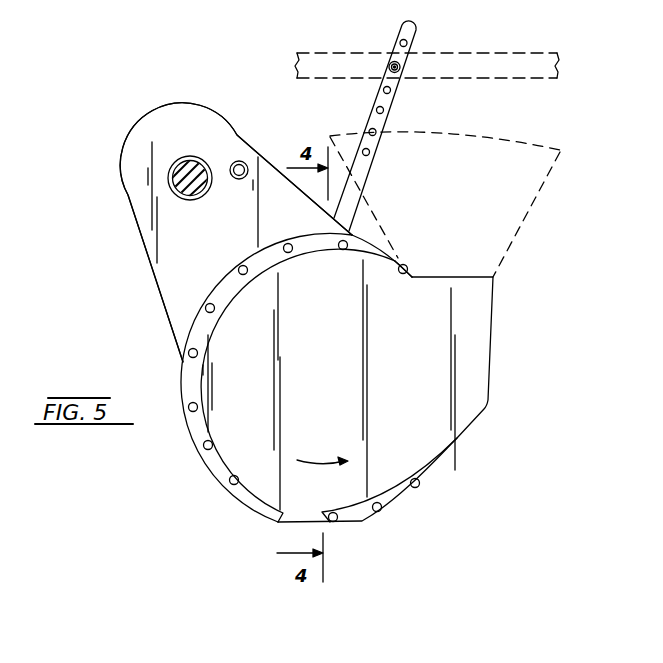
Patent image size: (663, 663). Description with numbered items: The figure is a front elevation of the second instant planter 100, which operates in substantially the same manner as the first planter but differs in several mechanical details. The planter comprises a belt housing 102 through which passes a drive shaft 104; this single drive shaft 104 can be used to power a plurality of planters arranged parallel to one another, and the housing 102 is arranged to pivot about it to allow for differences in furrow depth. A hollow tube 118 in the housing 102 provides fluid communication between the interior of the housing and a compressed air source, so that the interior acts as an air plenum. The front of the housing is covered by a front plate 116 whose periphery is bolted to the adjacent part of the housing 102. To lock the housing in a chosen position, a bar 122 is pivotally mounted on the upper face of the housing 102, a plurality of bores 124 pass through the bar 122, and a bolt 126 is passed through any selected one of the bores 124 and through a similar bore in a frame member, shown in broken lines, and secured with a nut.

The second instant planter 100 is at (152, 312).
The belt housing 102 is at (140, 168).
The drive shaft 104 is at (183, 166).
The front plate 116 is at (334, 377).
The hollow tube 118 is at (240, 161).
The bar 122 is at (415, 31).
The bores 124 is at (375, 110).
The bolt 126 is at (398, 73).